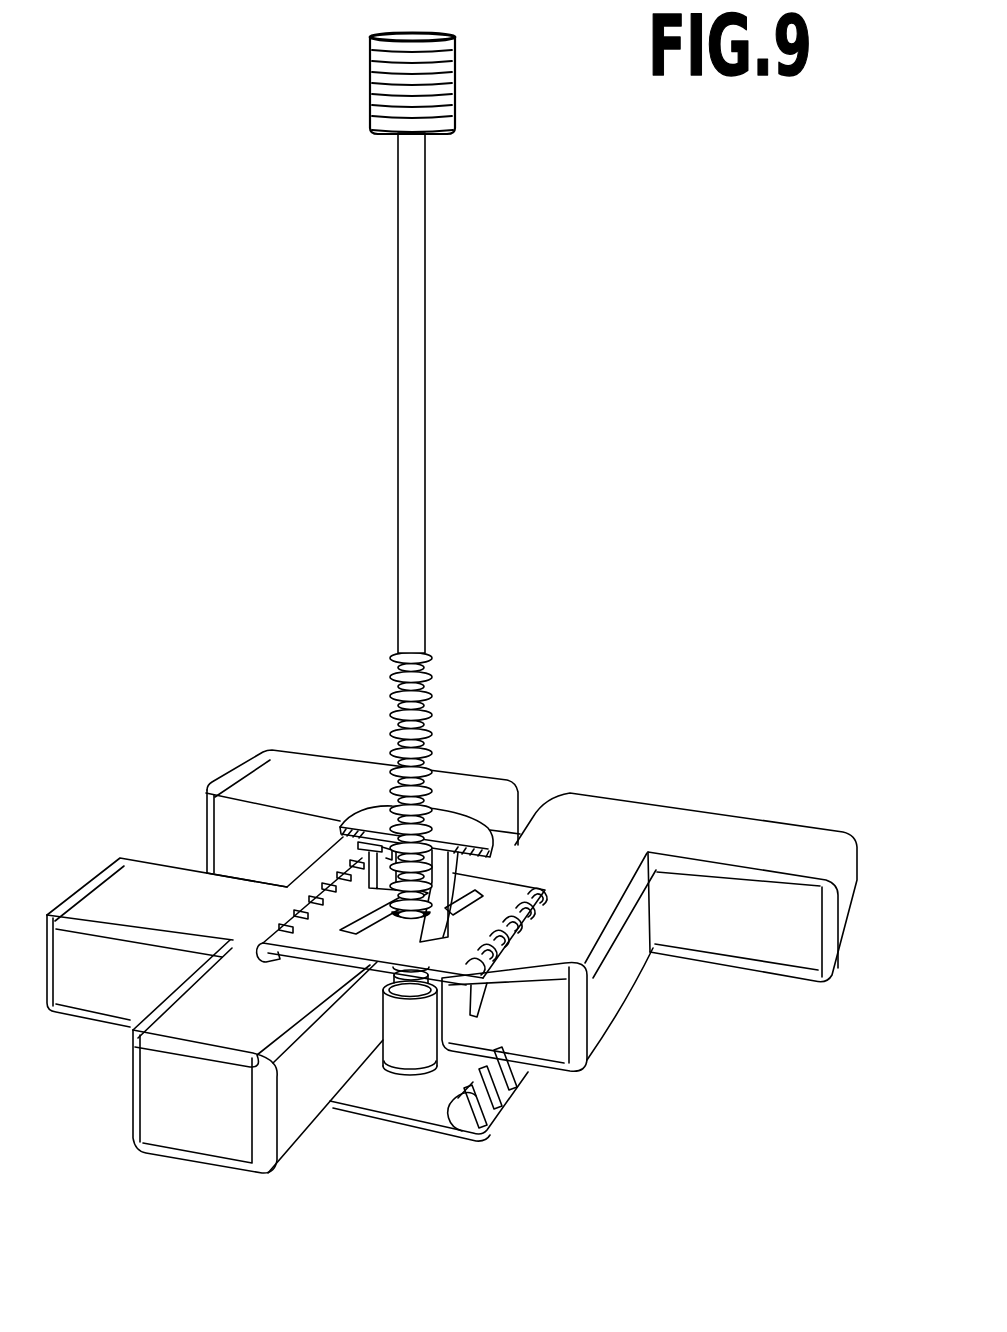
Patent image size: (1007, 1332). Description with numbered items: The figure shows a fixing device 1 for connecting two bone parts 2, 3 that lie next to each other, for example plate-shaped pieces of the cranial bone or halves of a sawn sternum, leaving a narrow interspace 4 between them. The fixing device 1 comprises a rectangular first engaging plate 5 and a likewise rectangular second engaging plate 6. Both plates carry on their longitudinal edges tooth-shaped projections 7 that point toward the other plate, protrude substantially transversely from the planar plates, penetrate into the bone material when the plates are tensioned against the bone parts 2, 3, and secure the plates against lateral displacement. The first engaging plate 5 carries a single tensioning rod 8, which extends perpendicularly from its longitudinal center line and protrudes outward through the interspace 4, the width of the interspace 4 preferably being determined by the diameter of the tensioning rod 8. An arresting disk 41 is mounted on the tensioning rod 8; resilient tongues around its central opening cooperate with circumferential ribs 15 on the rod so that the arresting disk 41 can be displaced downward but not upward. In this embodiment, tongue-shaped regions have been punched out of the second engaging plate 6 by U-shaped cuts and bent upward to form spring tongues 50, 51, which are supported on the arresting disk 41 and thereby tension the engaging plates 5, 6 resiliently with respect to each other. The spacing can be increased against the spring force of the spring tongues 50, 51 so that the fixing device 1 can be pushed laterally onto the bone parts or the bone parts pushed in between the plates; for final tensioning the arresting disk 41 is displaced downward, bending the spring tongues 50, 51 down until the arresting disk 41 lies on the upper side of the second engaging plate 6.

The fixing device 1 is at (447, 802).
The bone part 2 is at (138, 1107).
The bone part 3 is at (619, 986).
The interspace 4 is at (535, 812).
The first engaging plate 5 is at (384, 1102).
The second engaging plate 6 is at (512, 892).
The tooth-shaped projections 7 is at (457, 1097).
The tensioning rod 8 is at (413, 334).
The circumferential ribs 15 is at (400, 657).
The arresting disk 41 is at (384, 813).
The spring tongue 50 is at (382, 866).
The spring tongue 51 is at (445, 893).